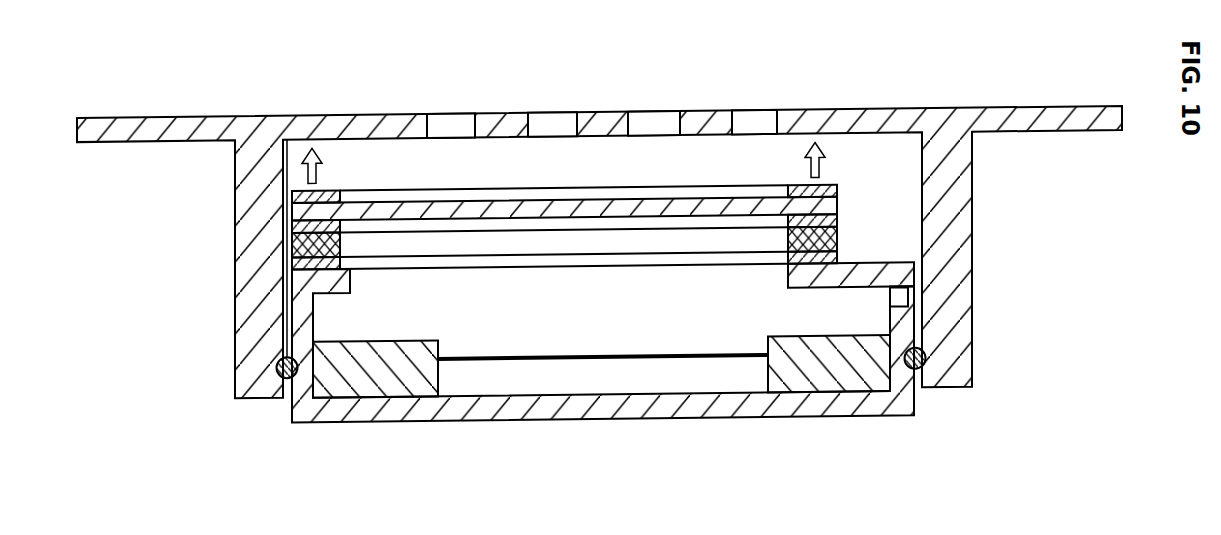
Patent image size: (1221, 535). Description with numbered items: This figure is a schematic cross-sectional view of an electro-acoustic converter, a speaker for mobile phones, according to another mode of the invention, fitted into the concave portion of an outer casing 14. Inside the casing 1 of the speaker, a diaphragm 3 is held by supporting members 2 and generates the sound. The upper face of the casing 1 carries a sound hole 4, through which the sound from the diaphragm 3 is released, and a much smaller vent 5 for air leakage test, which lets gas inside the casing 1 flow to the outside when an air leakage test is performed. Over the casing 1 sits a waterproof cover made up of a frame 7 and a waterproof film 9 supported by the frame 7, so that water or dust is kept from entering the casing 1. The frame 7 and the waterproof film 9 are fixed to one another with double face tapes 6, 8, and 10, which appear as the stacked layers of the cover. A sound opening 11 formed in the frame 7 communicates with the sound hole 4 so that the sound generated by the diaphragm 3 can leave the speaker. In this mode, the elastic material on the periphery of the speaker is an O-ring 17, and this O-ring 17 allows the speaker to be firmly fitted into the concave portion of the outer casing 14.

The casing 1 is at (903, 323).
The supporting member 2 is at (837, 382).
The diaphragm 3 is at (677, 358).
The sound hole 4 is at (554, 175).
The vent for air leakage test 5 is at (900, 298).
The double face tape 6 is at (837, 256).
The frame 7 is at (837, 238).
The double face tape 8 is at (837, 220).
The waterproof film 9 is at (837, 208).
The double face tape 10 is at (838, 184).
The sound opening 11 is at (564, 157).
The outer casing 14 is at (985, 107).
The O-ring 17 is at (278, 369).